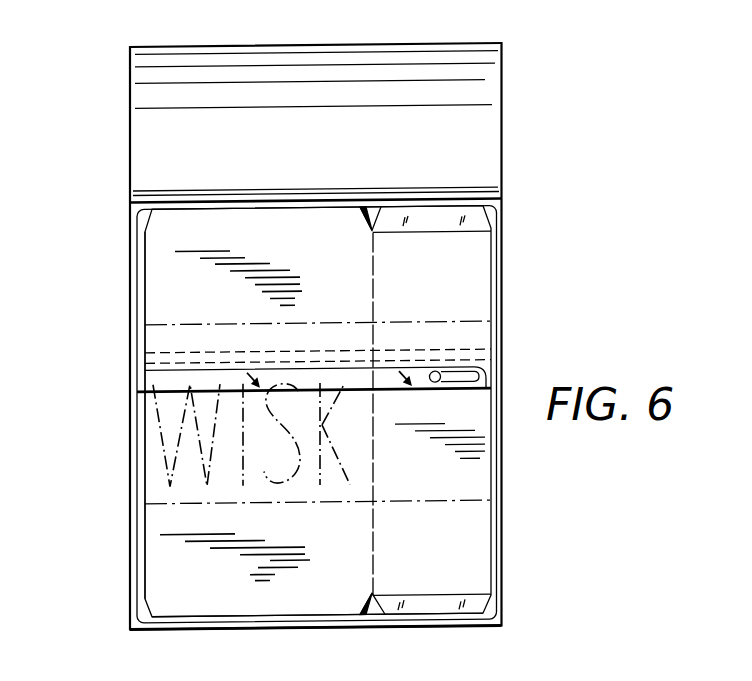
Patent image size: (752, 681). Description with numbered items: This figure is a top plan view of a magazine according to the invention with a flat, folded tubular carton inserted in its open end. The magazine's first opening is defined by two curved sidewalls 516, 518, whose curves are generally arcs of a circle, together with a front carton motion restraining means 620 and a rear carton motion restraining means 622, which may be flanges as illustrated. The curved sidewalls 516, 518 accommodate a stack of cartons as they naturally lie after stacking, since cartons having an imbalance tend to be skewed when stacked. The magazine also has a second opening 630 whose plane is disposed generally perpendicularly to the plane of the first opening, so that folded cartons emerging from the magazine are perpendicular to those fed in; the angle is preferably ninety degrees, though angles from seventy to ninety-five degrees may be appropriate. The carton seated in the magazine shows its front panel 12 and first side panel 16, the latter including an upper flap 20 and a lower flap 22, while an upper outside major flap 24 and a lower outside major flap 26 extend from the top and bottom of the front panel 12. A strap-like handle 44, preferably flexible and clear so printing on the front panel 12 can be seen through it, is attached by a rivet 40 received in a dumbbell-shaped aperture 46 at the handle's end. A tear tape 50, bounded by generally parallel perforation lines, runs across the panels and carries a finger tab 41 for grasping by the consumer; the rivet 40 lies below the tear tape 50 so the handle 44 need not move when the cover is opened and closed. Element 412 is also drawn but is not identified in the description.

The second opening 630 is at (452, 45).
The sidewall 518 is at (478, 198).
The rear carton motion restraining means 622 is at (503, 232).
The upper outside major flap 24 is at (165, 232).
The front carton motion restraining means 620 is at (130, 274).
The upper flap 20 is at (483, 293).
The tear tape 50 is at (318, 332).
The finger tab 41 is at (500, 351).
The rivet 40 is at (432, 385).
The dumbbell-shaped aperture 46 is at (483, 392).
The handle 44 is at (259, 434).
The first side panel 16 is at (488, 483).
The lower flap 22 is at (481, 528).
The front panel 12 is at (196, 505).
The partition 412 is at (390, 505).
The lower outside major flap 26 is at (160, 569).
The sidewall 516 is at (359, 631).